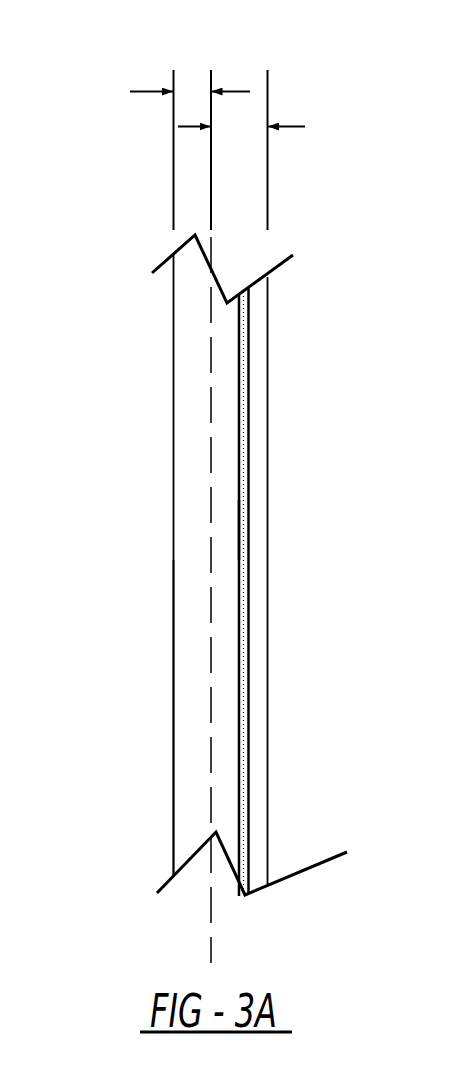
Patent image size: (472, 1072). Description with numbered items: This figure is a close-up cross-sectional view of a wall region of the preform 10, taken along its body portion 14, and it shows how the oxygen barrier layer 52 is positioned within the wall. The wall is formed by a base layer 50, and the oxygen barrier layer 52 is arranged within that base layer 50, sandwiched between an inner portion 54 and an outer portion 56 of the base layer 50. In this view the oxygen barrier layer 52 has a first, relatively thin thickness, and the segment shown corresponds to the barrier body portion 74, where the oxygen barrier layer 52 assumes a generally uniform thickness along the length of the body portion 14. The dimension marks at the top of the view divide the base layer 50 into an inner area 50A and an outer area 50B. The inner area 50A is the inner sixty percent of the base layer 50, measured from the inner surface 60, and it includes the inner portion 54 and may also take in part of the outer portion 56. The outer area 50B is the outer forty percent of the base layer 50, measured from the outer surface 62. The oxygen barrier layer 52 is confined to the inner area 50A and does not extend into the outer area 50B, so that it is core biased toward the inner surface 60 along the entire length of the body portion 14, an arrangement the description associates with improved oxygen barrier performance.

The preform 10 is at (117, 257).
The body portion 14 is at (173, 620).
The base layer 50 is at (173, 402).
The inner area 50A is at (298, 126).
The outer area 50B is at (143, 91).
The oxygen barrier layer 52 is at (238, 352).
The inner portion 54 is at (263, 408).
The outer portion 56 is at (227, 457).
The inner surface 60 is at (267, 623).
The outer surface 62 is at (175, 755).
The barrier body portion 74 is at (242, 530).